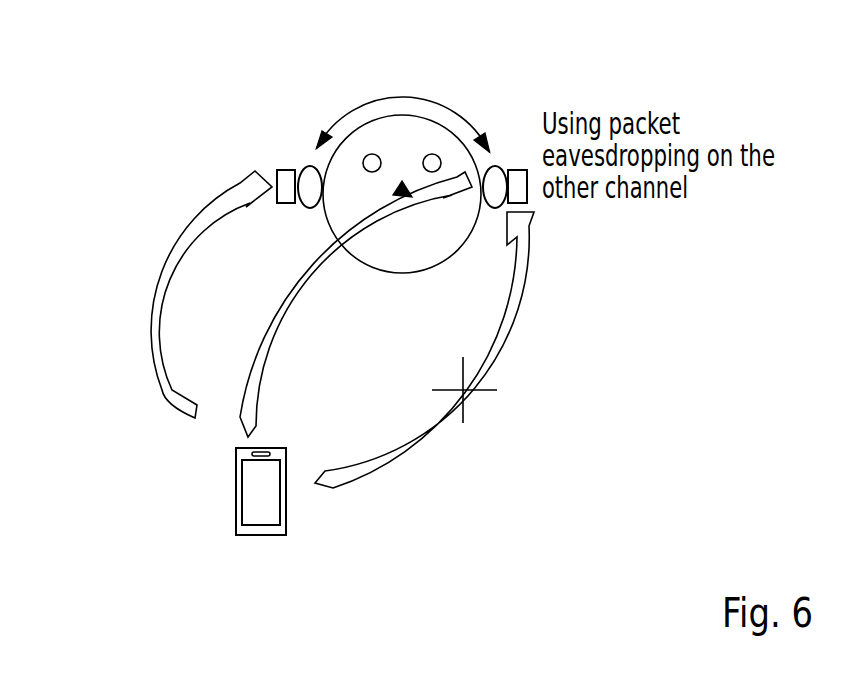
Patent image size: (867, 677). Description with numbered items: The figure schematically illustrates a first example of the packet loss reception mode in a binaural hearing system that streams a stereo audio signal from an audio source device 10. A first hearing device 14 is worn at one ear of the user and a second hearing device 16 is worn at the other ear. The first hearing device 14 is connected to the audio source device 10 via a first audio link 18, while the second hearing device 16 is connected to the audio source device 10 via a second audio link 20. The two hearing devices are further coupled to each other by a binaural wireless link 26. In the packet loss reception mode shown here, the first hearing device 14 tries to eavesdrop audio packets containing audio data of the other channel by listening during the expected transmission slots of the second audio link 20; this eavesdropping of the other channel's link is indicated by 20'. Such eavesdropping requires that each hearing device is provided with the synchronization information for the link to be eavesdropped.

The audio source device 10 is at (288, 516).
The first hearing device 14 is at (515, 170).
The second hearing device 16 is at (283, 170).
The first audio link 18 is at (437, 425).
The second audio link 20 is at (144, 294).
The eavesdropping of the second audio link 20' is at (306, 399).
The binaural wireless link 26 is at (448, 111).